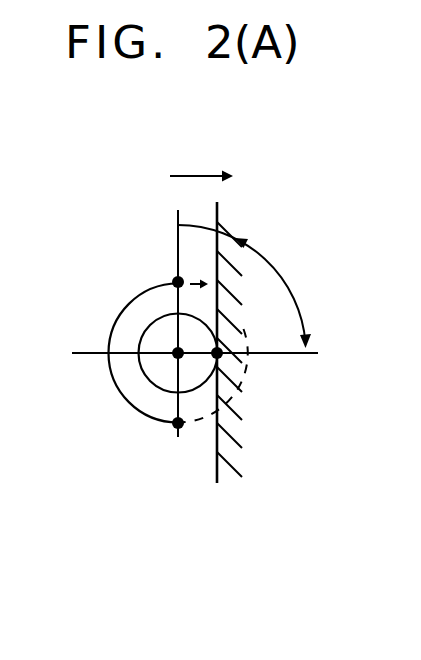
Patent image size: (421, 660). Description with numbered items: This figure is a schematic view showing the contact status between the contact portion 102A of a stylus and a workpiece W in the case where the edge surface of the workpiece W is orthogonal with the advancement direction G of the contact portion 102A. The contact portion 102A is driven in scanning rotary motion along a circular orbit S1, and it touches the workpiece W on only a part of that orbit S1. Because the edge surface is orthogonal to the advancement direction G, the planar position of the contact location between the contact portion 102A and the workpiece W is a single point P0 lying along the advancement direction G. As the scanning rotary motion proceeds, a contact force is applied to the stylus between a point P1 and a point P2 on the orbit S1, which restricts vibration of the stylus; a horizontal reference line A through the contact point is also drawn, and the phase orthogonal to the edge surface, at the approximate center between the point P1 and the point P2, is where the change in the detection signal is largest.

The advancement direction G is at (200, 175).
The point P1 is at (178, 281).
The orbit of the scanning rotary motion S1 is at (128, 304).
The contact portion 102A is at (160, 372).
The point P2 is at (180, 428).
The point P0 is at (217, 353).
The workpiece W is at (238, 478).
The horizontal reference axis A is at (195, 371).